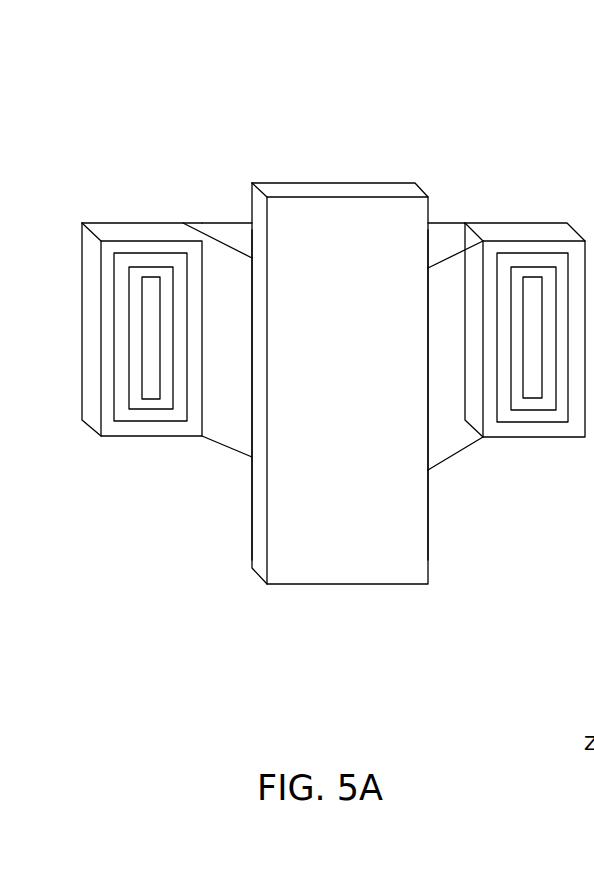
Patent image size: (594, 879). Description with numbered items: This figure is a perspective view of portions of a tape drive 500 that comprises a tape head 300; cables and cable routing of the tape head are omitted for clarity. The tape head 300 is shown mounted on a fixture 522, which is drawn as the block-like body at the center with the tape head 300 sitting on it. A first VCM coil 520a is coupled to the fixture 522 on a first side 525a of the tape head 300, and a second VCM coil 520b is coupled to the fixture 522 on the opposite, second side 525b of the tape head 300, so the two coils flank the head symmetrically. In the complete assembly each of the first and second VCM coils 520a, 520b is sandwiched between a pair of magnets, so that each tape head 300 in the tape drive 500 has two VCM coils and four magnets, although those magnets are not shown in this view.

The tape drive 500 is at (137, 87).
The first VCM coil 520a is at (124, 234).
The second VCM coil 520b is at (522, 235).
The fixture 522 is at (225, 233).
The tape head 300 is at (363, 385).
The first side 525a is at (245, 523).
The second side 525b is at (435, 523).